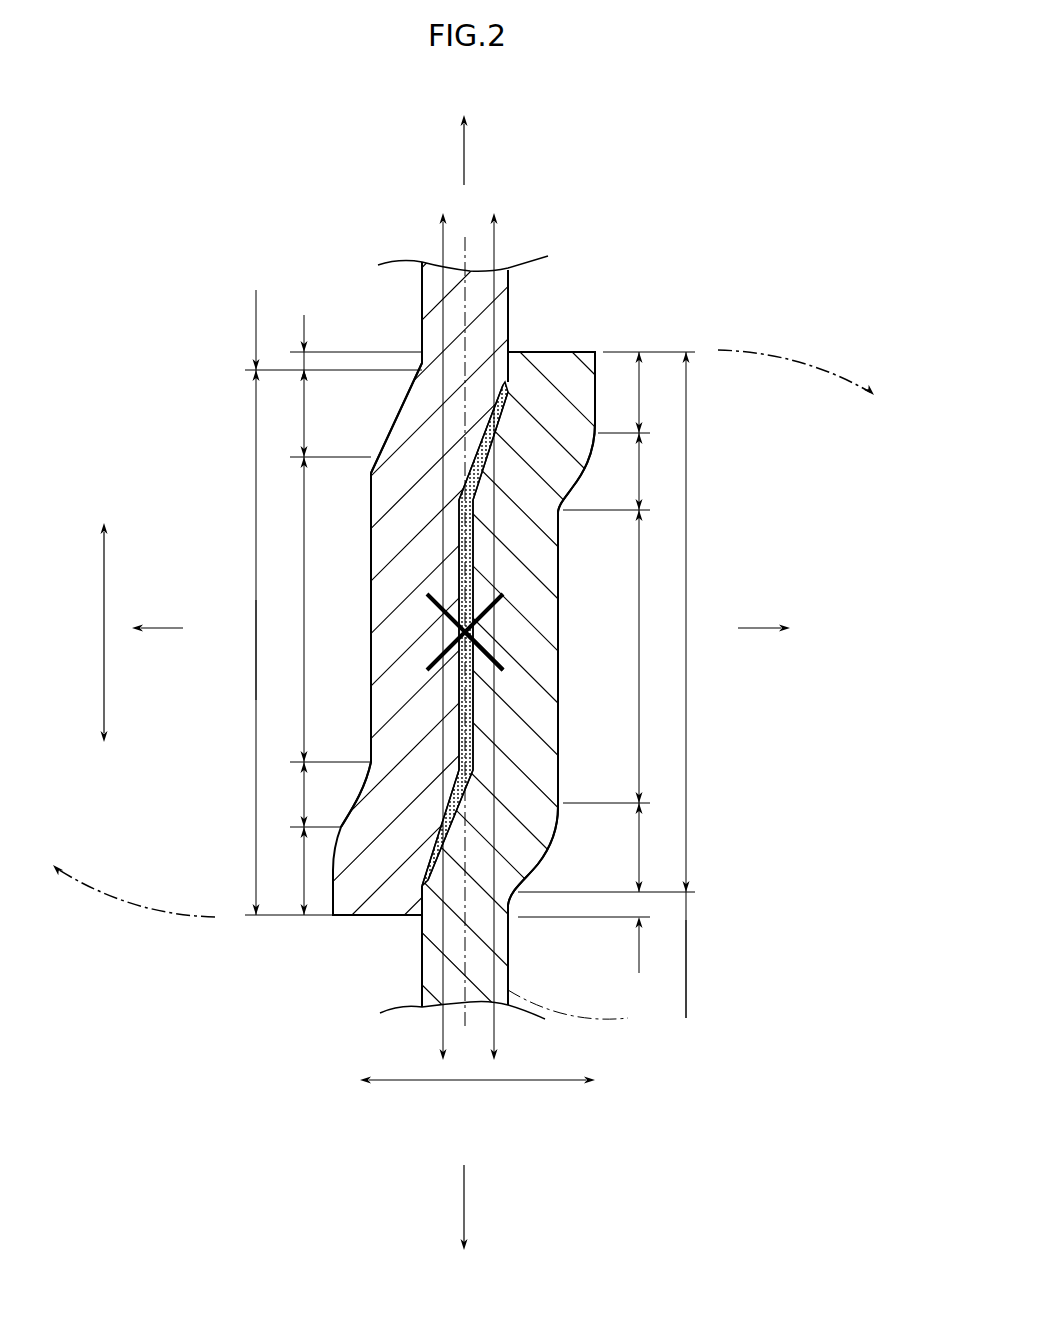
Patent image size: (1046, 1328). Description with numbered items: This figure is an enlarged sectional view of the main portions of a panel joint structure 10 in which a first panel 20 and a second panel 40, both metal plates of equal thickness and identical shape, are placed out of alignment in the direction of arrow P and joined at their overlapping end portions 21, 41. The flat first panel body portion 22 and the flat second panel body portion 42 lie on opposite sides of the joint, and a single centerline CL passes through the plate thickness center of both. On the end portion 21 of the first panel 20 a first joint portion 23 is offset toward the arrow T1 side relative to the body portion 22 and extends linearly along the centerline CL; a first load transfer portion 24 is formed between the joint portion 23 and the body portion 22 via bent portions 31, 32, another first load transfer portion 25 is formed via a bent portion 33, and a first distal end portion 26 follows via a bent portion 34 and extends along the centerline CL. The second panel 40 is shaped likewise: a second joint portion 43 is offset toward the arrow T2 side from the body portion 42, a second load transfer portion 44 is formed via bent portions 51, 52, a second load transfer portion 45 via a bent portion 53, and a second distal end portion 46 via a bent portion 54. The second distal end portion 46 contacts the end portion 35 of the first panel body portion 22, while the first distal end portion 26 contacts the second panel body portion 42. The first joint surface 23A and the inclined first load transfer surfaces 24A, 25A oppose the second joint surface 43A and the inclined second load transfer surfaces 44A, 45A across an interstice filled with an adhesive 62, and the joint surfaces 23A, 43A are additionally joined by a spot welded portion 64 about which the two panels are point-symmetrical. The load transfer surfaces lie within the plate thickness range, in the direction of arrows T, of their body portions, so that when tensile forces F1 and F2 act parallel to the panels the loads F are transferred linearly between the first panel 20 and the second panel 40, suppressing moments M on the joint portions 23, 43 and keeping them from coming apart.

The panel joint structure 10 is at (604, 193).
The first panel 20 is at (522, 975).
The end portion of the first panel 21 is at (687, 660).
The first panel body portion 22 is at (687, 958).
The first joint portion 23 is at (640, 655).
The first load transfer portion 24 is at (640, 833).
The first load transfer portion 25 is at (640, 462).
The first distal end portion 26 is at (640, 383).
The first joint surface 23A is at (458, 548).
The first load transfer surface 24A is at (431, 857).
The first load transfer surface 25A is at (481, 440).
The bent portion 31 is at (517, 914).
The bent portion 32 is at (563, 806).
The bent portion 33 is at (563, 505).
The bent portion 34 is at (594, 425).
The end portion of the first panel body portion 35 is at (640, 903).
The second panel 40 is at (418, 300).
The end portion of the second panel 41 is at (256, 648).
The second panel body portion 42 is at (256, 309).
The second joint portion 43 is at (302, 563).
The second load transfer portion 44 is at (302, 405).
The second load transfer portion 45 is at (303, 360).
The second distal end portion 46 is at (302, 845).
The second joint surface 43A is at (475, 698).
The second load transfer surface 44A is at (502, 412).
The second load transfer surface 45A is at (464, 818).
The bent portion 51 is at (418, 362).
The bent portion 52 is at (371, 465).
The bent portion 53 is at (371, 762).
The bent portion 54 is at (339, 827).
The adhesive 62 is at (474, 577).
The welded portion 64 is at (504, 662).
The loads F is at (442, 282).
The tensile force F1 is at (463, 158).
The tensile force F2 is at (463, 1196).
The moments M is at (803, 360).
The arrow P direction P is at (103, 607).
The arrows T direction T is at (515, 1082).
The arrow T1 side T1 is at (762, 628).
The arrow T2 side T2 is at (163, 628).
The centerline CL is at (584, 1012).